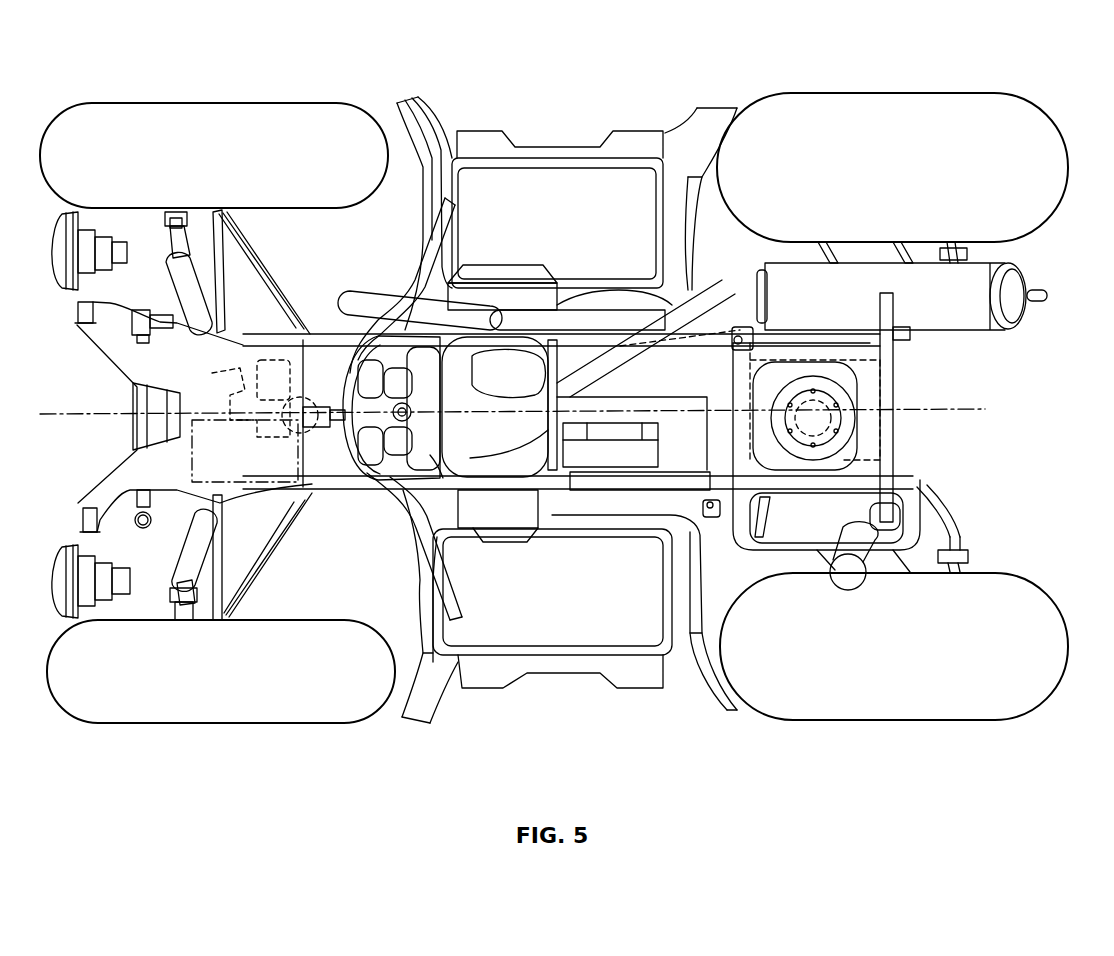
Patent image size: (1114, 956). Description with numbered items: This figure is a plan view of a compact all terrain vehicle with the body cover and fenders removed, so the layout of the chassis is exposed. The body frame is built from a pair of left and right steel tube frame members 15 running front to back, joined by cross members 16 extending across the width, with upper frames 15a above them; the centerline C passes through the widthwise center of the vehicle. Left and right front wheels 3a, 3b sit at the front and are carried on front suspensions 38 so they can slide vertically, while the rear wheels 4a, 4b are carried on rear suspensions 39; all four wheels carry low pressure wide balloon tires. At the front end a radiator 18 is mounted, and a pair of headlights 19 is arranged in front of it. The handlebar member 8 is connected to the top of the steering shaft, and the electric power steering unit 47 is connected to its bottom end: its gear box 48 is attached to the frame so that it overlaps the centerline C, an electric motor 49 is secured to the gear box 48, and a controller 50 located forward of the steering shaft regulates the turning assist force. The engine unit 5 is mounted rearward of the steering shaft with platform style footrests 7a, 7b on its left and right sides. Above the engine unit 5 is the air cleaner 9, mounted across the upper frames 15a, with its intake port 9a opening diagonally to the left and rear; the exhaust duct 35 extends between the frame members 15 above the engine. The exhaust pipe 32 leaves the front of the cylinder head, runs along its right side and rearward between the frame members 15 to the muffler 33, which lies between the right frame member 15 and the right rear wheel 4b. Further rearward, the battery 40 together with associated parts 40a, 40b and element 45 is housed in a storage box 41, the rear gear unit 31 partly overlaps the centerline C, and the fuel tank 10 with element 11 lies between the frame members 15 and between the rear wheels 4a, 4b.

The front wheel 3a is at (275, 723).
The front wheel 3b is at (268, 103).
The rear wheel 4a is at (975, 720).
The rear wheel 4b is at (960, 93).
The engine unit 5 is at (560, 275).
The footrest 7a is at (577, 655).
The footrest 7b is at (575, 178).
The handlebar member 8 is at (432, 222).
The air cleaner 9 is at (432, 488).
The intake port 9a is at (440, 478).
The fuel tank 10 is at (795, 553).
The rear axle housing 11 is at (888, 440).
The frame member 15 is at (298, 333).
The upper frame 15a is at (322, 330).
The cross member 16 is at (895, 362).
The radiator 18 is at (130, 410).
The headlight 19 is at (98, 225).
The rear gear unit 31 is at (825, 360).
The exhaust pipe 32 is at (723, 290).
The muffler 33 is at (975, 333).
The exhaust duct 35 is at (360, 285).
The front suspension 38 is at (255, 236).
The rear suspension 39 is at (985, 256).
The battery 40 is at (661, 453).
The battery bracket 40a is at (620, 470).
The battery cover 40b is at (658, 430).
The storage box 41 is at (747, 460).
The bolt 45 is at (780, 345).
The electric power steering unit 47 is at (207, 322).
The gear box 48 is at (236, 394).
The electric motor 49 is at (253, 366).
The controller 50 is at (193, 466).
The centerline C is at (968, 409).